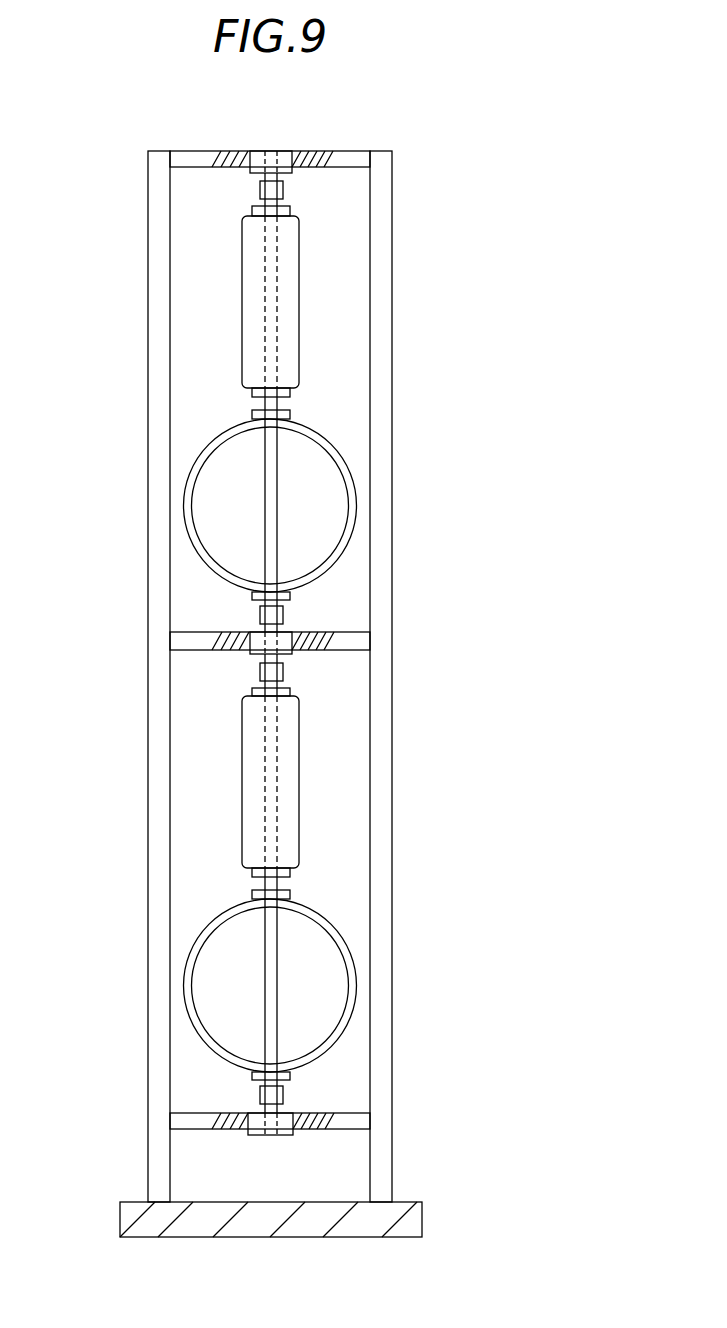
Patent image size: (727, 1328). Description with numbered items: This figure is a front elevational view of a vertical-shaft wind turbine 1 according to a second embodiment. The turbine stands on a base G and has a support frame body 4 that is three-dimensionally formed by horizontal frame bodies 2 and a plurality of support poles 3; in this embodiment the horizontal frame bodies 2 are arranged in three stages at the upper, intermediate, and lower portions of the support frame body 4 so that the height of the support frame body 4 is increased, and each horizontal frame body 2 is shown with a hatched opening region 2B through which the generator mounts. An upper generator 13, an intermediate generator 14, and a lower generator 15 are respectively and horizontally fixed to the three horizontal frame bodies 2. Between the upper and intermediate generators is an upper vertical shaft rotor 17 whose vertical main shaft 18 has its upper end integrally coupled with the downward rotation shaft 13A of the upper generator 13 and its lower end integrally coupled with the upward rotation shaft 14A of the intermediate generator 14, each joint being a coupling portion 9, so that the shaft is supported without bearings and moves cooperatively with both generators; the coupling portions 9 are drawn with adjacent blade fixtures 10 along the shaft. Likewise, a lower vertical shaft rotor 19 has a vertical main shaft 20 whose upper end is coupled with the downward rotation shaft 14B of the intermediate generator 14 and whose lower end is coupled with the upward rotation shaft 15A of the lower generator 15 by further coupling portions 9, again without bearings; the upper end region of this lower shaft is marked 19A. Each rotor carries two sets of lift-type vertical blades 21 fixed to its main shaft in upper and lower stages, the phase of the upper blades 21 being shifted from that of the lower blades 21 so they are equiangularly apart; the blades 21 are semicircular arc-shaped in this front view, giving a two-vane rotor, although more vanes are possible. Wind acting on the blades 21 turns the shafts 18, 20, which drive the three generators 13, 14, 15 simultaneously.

The vertical-shaft wind turbine 1 is at (450, 283).
The horizontal frame body 2 is at (354, 152).
The through hole of support plate 2B is at (233, 152).
The support pole 3 is at (148, 1170).
The support frame body 4 is at (393, 445).
The coupling portion 9 is at (260, 188).
The blade fixture 10 is at (252, 210).
The upper generator 13 is at (285, 152).
The downward rotation shaft of the upper generator 13A is at (285, 176).
The intermediate generator 14 is at (292, 654).
The upward rotation shaft of the intermediate generator 14A is at (284, 623).
The downward rotation shaft of the intermediate generator 14B is at (250, 654).
The lower generator 15 is at (285, 1132).
The upward rotation shaft of the lower generator 15A is at (286, 1110).
The upper vertical shaft rotor 17 is at (305, 325).
The vertical main shaft of the upper vertical shaft rotor 18 is at (286, 203).
The lower vertical shaft rotor 19 is at (305, 795).
The upper end of second shaft 19A is at (285, 683).
The vertical main shaft of the lower vertical shaft rotor 20 is at (282, 883).
The lift-type vertical blade 21 is at (243, 296).
The base G is at (422, 1218).